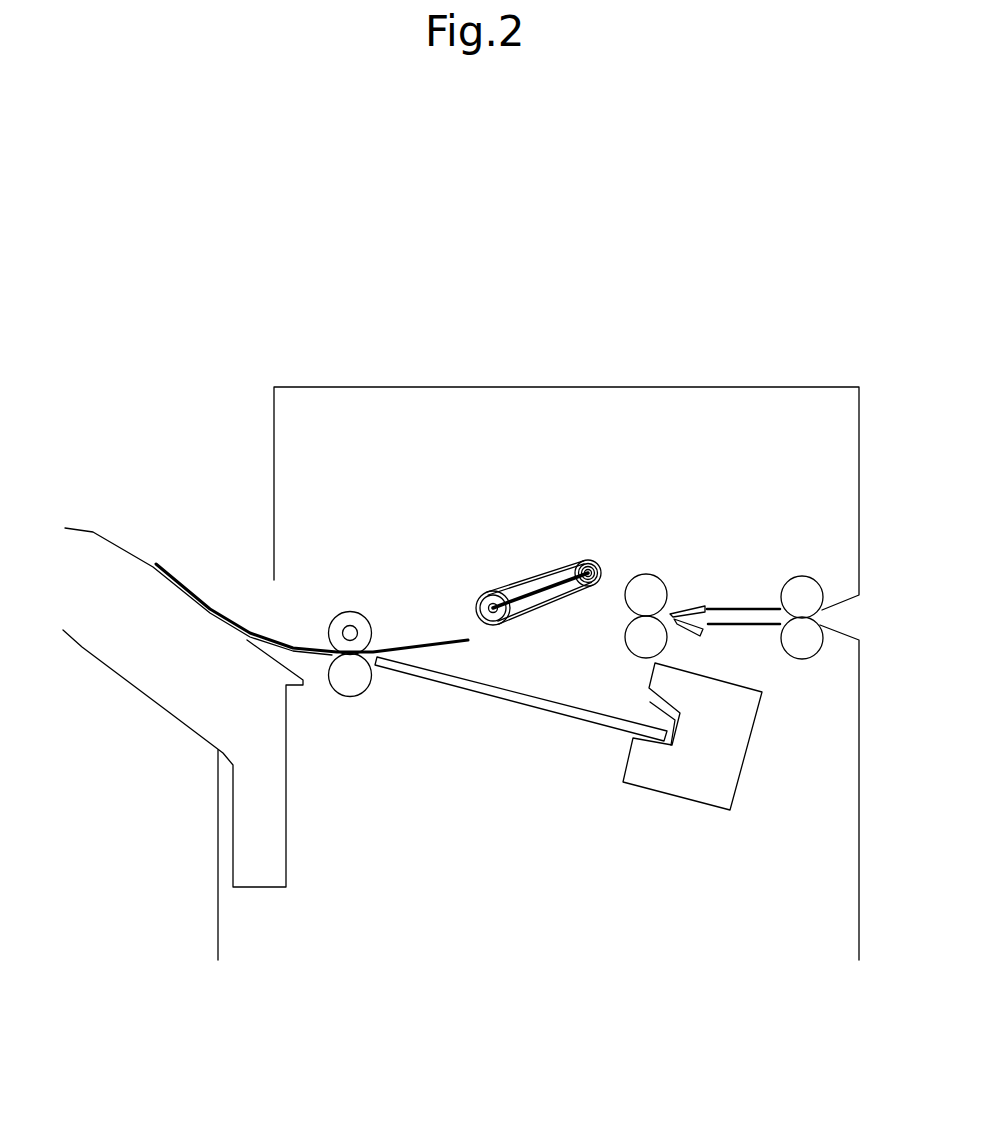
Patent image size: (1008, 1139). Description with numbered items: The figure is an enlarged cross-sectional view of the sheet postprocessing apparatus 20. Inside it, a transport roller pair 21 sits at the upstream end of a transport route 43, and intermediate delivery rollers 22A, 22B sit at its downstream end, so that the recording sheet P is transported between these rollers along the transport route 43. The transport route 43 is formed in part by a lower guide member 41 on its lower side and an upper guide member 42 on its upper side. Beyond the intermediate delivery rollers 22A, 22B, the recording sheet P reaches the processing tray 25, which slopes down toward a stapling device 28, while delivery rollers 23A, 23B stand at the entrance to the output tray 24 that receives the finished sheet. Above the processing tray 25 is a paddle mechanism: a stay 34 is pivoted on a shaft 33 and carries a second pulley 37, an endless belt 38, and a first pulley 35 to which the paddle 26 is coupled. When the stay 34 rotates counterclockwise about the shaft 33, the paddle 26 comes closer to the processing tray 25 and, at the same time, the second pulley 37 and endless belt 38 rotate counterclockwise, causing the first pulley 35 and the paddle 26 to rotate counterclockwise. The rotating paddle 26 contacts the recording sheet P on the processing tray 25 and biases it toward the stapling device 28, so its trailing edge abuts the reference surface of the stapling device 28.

The sheet postprocessing apparatus 20 is at (755, 380).
The transport roller pair 21 is at (802, 575).
The intermediate delivery roller 22A is at (646, 573).
The intermediate delivery roller 22B is at (632, 657).
The delivery roller 23A is at (350, 611).
The delivery roller 23B is at (350, 697).
The output tray 24 is at (93, 532).
The processing tray 25 is at (468, 692).
The paddle 26 is at (526, 570).
The stapling device 28 is at (675, 797).
The shaft 33 is at (588, 558).
The stay 34 is at (547, 572).
The first pulley 35 is at (488, 627).
The second pulley 37 is at (600, 583).
The endless belt 38 is at (560, 600).
The lower guide member 41 is at (687, 624).
The upper guide member 42 is at (684, 608).
The transport route 43 is at (720, 627).
The recording sheet P is at (207, 613).